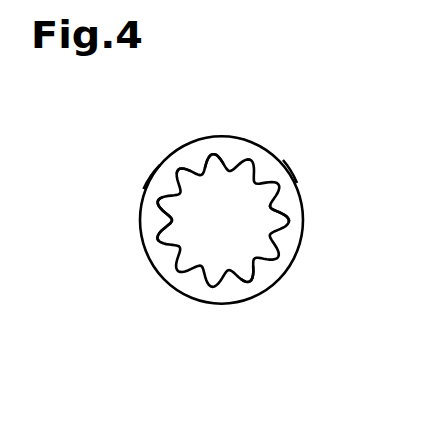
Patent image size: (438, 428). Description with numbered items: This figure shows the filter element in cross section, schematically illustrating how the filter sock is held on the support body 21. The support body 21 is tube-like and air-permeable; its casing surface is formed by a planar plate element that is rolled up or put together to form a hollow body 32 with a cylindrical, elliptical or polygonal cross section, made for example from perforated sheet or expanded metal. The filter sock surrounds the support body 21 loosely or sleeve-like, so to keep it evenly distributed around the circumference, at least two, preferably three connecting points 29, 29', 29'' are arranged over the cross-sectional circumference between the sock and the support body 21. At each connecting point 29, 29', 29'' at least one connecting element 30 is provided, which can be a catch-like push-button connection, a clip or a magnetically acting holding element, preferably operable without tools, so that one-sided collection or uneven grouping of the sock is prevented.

The support body 21 is at (178, 270).
The connecting point 29 is at (254, 242).
The connecting point 29' is at (102, 157).
The connecting point 29'' is at (340, 139).
The connecting element 30 is at (157, 197).
The hollow body 32 is at (187, 232).